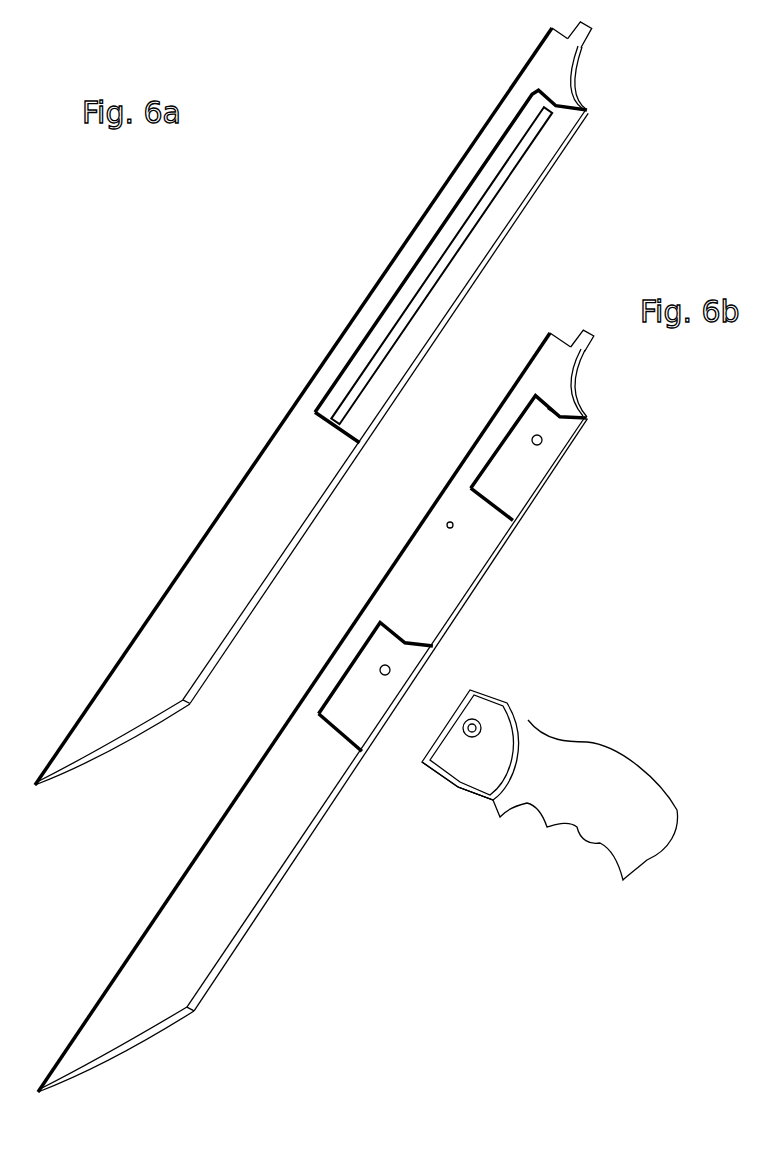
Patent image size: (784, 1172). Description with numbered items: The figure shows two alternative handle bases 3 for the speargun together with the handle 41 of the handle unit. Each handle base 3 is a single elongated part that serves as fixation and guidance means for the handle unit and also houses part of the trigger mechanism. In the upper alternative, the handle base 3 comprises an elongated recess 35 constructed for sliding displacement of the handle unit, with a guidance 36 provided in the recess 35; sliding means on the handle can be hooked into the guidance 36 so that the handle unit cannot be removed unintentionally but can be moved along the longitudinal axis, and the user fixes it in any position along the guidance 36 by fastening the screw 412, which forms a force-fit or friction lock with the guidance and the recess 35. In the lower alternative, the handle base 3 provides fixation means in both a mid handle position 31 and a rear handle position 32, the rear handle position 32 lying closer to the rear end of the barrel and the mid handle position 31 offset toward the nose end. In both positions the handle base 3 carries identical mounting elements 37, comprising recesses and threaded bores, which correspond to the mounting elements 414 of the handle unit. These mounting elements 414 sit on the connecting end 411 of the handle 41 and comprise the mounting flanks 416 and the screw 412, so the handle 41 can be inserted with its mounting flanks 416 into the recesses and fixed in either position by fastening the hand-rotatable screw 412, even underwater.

In FIG. 6a, the handle base 3 is at (168, 628).
In FIG. 6b, the handle base 3 is at (233, 905).
In FIG. 6b, the mid handle position 31 is at (443, 664).
In FIG. 6b, the rear handle position 32 is at (602, 424).
In FIG. 6a, the elongated recess 35 is at (429, 266).
In FIG. 6a, the guidance 36 is at (470, 223).
In FIG. 6a, the mounting element 37 is at (385, 312).
In FIG. 6b, the mounting element 37 is at (507, 460).
In FIG. 6b, the handle 41 is at (512, 816).
In FIG. 6b, the connecting end 411 is at (426, 792).
In FIG. 6b, the screw 412 is at (482, 728).
In FIG. 6b, the mounting element 414 is at (463, 826).
In FIG. 6b, the mounting flank 416 is at (443, 760).